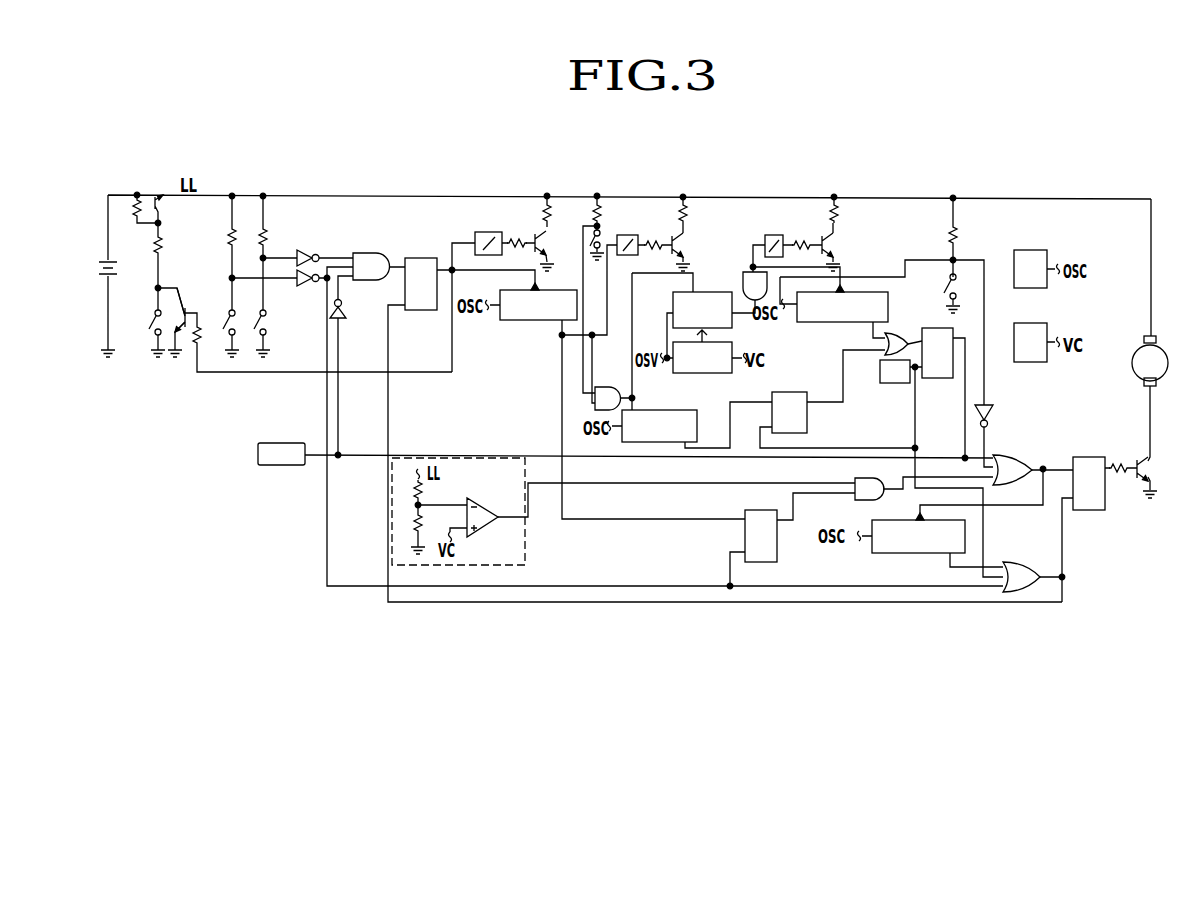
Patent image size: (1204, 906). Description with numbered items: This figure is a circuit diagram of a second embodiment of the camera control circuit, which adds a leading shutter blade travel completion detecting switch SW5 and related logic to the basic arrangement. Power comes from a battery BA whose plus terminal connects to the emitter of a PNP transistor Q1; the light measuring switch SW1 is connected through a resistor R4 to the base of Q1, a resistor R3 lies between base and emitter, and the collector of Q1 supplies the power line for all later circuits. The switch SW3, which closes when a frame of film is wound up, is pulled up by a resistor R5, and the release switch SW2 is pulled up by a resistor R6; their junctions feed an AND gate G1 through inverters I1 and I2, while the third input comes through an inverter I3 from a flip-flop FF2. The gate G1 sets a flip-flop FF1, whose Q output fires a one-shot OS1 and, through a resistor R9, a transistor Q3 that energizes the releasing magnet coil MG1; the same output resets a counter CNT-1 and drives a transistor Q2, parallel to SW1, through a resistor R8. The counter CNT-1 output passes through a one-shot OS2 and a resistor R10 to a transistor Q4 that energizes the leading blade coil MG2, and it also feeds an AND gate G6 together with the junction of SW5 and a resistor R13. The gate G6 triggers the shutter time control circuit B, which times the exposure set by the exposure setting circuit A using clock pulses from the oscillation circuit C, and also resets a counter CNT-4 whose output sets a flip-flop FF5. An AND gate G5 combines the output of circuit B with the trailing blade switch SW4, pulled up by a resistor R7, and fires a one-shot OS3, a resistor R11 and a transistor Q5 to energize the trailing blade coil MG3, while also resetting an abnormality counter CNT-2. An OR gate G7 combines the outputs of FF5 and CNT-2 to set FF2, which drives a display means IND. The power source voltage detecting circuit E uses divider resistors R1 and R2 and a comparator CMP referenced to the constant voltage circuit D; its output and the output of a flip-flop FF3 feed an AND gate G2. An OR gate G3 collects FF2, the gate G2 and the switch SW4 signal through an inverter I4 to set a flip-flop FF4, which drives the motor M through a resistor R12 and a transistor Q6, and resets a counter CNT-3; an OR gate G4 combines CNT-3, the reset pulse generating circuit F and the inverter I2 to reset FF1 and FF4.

The power source battery BA is at (97, 268).
The PNP transistor Q1 is at (156, 198).
The NPN transistor Q2 is at (188, 306).
The NPN transistor Q3 is at (552, 244).
The NPN transistor Q4 is at (689, 244).
The NPN transistor Q5 is at (839, 245).
The NPN transistor Q6 is at (1155, 470).
The voltage dividing resistor R1 is at (426, 491).
The voltage dividing resistor R2 is at (426, 525).
The resistor R3 is at (126, 211).
The resistor R4 is at (165, 248).
The resistor R5 is at (222, 236).
The resistor R6 is at (274, 236).
The resistor R7 is at (964, 235).
The resistor R8 is at (206, 337).
The resistor R9 is at (517, 231).
The resistor R10 is at (653, 257).
The resistor R11 is at (804, 232).
The resistor R12 is at (1121, 457).
The resistor R13 is at (609, 215).
The light measuring switch SW1 is at (138, 324).
The normally open switch SW2 is at (275, 326).
The normally open switch SW3 is at (233, 340).
The trailing shutter blade travel completion detecting switch SW4 is at (934, 288).
The leading shutter blade travel completion detecting switch SW5 is at (600, 246).
The inverter I1 is at (306, 246).
The inverter I2 is at (307, 294).
The inverter I3 is at (347, 313).
The inverter I4 is at (993, 411).
The AND gate G1 is at (371, 266).
The AND gate G2 is at (869, 490).
The OR gate G3 is at (1012, 470).
The OR gate G4 is at (1021, 577).
The AND gate G5 is at (755, 286).
The AND gate G6 is at (608, 399).
The OR gate G7 is at (896, 334).
The RS flip-flop FF1 is at (429, 311).
The RS flip-flop FF2 is at (943, 380).
The RS flip-flop FF3 is at (768, 566).
The RS flip-flop FF4 is at (1094, 510).
The flip-flop FF5 is at (788, 389).
The counter CNT-1 is at (540, 320).
The counter CNT-2 is at (839, 321).
The counter CNT-3 is at (920, 553).
The counter CNT-4 is at (665, 400).
The one-shot circuit OS1 is at (488, 229).
The one-shot circuit OS2 is at (620, 236).
The one-shot circuit OS3 is at (777, 232).
The releasing magnet coil MG1 is at (561, 213).
The leading blade unlocking magnet coil MG2 is at (699, 215).
The electromagnet coil MG3 is at (850, 213).
The exposure setting circuit A is at (702, 357).
The shutter time control circuit B is at (702, 310).
The oscillation circuit C is at (1030, 269).
The constant voltage circuit D is at (1030, 342).
The power source voltage detecting circuit E is at (470, 465).
The reset pulse generating circuit F is at (895, 371).
The motor M is at (1167, 361).
The display means IND is at (281, 455).
The comparator CMP is at (490, 530).